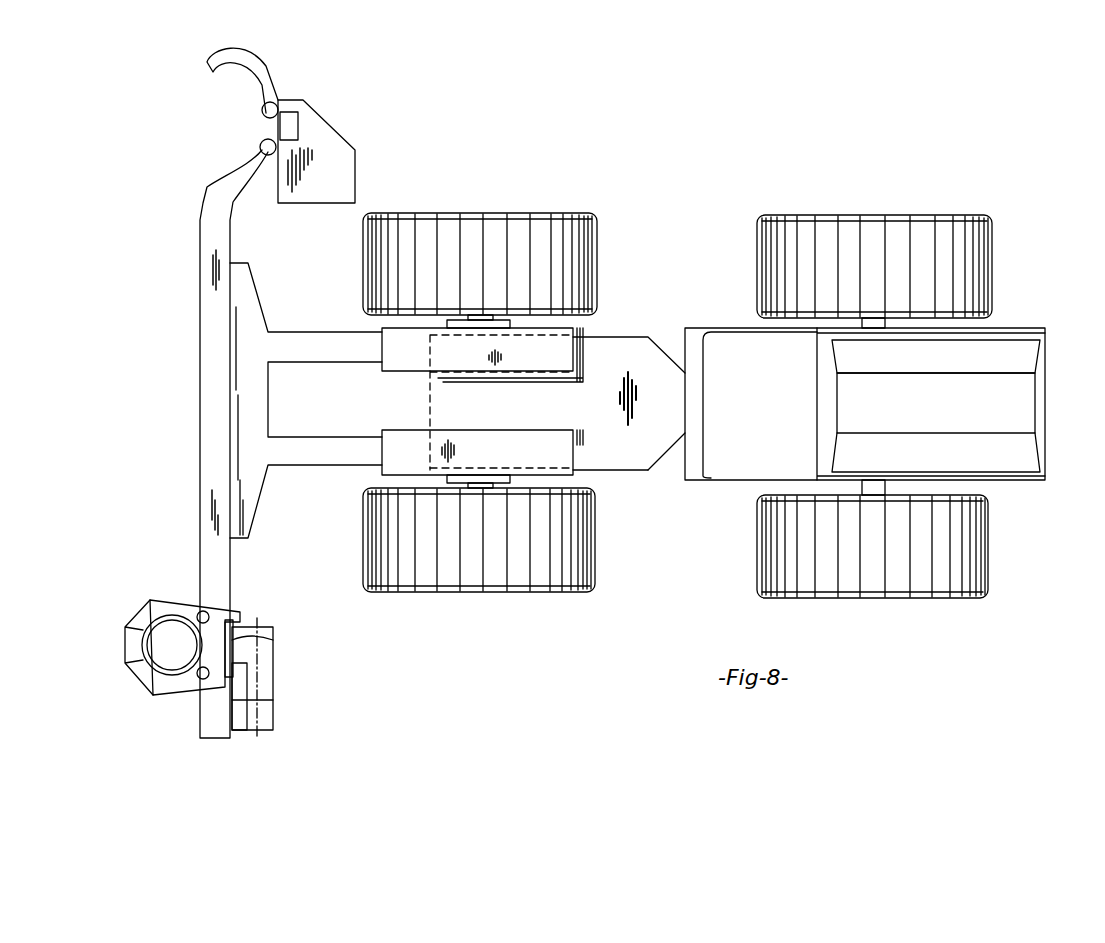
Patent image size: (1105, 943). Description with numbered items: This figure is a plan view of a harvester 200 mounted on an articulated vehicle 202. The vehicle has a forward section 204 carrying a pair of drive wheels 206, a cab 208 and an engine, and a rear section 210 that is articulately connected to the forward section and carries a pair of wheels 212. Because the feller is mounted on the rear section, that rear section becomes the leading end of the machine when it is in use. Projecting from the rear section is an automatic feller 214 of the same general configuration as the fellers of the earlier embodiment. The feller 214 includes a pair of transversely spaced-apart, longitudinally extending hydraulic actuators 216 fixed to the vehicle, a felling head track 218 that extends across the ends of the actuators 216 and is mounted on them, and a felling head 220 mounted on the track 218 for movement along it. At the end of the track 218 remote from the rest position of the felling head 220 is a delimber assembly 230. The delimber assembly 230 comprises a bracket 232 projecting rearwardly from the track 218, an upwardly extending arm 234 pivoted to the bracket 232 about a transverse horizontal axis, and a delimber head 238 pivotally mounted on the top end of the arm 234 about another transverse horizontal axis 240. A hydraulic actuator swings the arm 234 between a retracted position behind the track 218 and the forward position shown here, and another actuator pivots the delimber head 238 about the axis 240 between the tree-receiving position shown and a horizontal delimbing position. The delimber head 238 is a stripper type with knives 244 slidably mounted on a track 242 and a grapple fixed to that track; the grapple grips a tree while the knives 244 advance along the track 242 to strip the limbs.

The harvester 200 is at (677, 538).
The vehicle 202 is at (648, 472).
The forward section 204 is at (717, 322).
The drive wheels 206 is at (913, 202).
The cab 208 is at (718, 467).
The rear section 210 is at (635, 332).
The wheels 212 is at (530, 217).
The automatic feller 214 is at (334, 580).
The hydraulic actuators 216 is at (390, 433).
The felling head track 218 is at (218, 555).
The felling head 220 is at (343, 160).
The delimber assembly 230 is at (280, 660).
The bracket 232 is at (253, 733).
The arm 234 is at (257, 710).
The delimber head 238 is at (182, 697).
The transverse horizontal axis 240 is at (257, 625).
The track 242 is at (273, 635).
The knives 244 is at (190, 607).